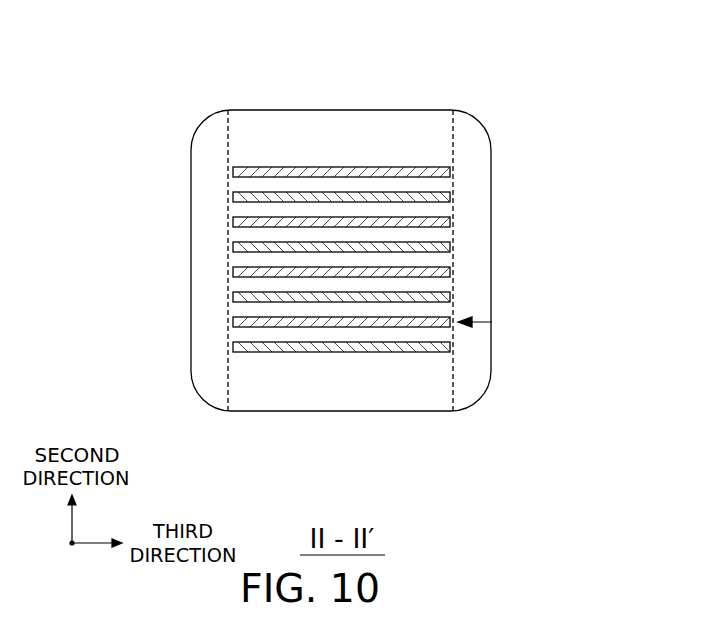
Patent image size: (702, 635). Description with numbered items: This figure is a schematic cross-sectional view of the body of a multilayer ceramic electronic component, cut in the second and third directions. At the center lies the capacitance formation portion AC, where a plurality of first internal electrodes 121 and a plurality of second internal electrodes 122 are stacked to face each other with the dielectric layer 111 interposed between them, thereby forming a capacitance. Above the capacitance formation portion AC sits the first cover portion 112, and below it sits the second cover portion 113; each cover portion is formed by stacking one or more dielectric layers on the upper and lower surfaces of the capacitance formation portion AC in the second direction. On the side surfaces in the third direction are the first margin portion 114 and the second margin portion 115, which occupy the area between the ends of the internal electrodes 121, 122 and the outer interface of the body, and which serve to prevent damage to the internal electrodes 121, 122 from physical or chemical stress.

The dielectric layer 111 is at (277, 183).
The first cover portion 112 is at (322, 123).
The second cover portion 113 is at (365, 402).
The first margin portion 114 is at (203, 345).
The second margin portion 115 is at (477, 260).
The first internal electrode 121 is at (372, 172).
The second internal electrode 122 is at (412, 248).
The capacitance formation portion AC is at (492, 322).